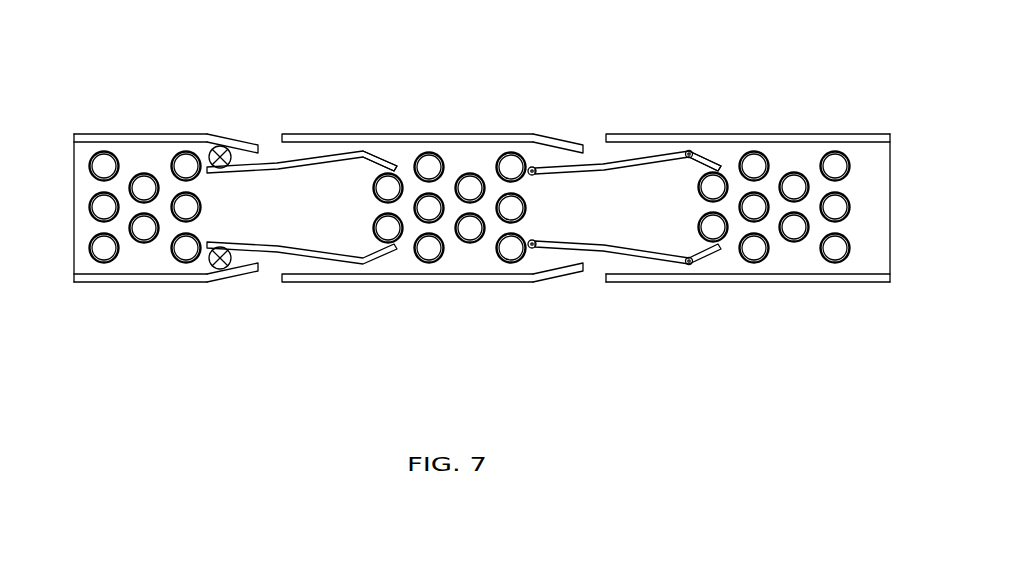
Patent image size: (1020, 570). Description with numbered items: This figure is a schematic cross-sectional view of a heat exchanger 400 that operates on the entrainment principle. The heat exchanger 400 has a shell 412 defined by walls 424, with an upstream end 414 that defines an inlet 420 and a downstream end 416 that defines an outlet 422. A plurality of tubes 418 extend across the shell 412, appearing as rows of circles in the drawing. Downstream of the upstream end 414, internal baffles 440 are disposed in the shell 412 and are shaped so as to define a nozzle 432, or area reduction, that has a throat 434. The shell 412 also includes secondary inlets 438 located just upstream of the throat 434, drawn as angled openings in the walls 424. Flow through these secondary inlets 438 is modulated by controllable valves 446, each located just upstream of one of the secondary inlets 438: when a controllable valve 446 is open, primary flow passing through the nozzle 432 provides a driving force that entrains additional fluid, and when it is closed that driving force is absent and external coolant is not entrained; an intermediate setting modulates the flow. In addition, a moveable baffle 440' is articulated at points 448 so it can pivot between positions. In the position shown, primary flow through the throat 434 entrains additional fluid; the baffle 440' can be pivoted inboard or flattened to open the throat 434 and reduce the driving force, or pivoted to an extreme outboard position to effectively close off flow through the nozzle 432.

The heat exchanger 400 is at (474, 56).
The shell 412 is at (822, 281).
The upstream end 414 is at (118, 231).
The downstream end 416 is at (762, 252).
The tubes 418 is at (835, 151).
The inlet 420 is at (73, 280).
The outlet 422 is at (890, 282).
The walls 424 is at (92, 137).
The nozzle 432 is at (283, 152).
The throat 434 is at (363, 164).
The secondary inlets 438 is at (222, 142).
The internal baffles 440 is at (302, 237).
The moveable baffle 440' is at (628, 238).
The controllable valve 446 is at (208, 154).
The articulation points 448 is at (689, 149).